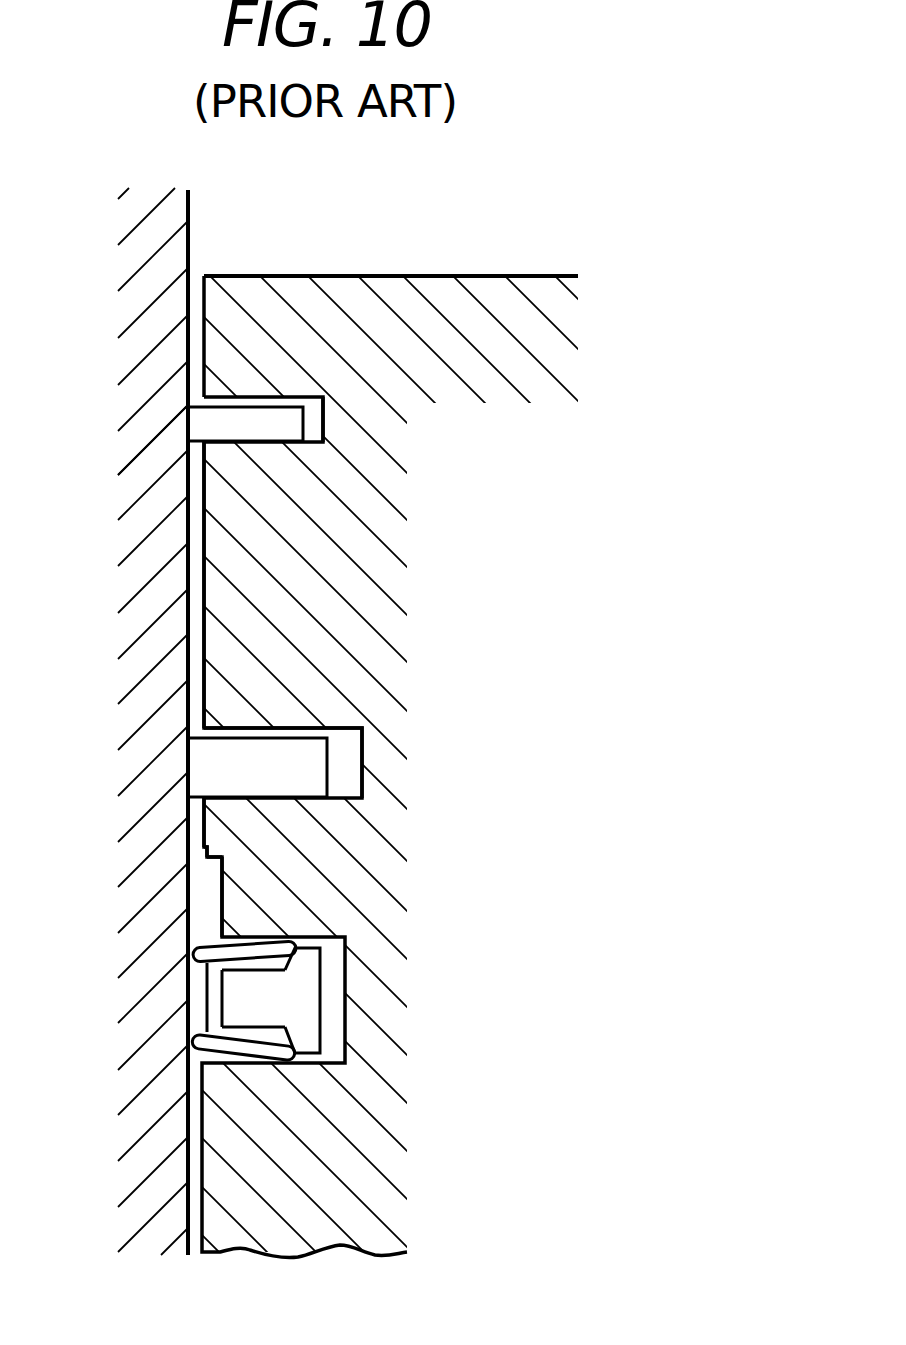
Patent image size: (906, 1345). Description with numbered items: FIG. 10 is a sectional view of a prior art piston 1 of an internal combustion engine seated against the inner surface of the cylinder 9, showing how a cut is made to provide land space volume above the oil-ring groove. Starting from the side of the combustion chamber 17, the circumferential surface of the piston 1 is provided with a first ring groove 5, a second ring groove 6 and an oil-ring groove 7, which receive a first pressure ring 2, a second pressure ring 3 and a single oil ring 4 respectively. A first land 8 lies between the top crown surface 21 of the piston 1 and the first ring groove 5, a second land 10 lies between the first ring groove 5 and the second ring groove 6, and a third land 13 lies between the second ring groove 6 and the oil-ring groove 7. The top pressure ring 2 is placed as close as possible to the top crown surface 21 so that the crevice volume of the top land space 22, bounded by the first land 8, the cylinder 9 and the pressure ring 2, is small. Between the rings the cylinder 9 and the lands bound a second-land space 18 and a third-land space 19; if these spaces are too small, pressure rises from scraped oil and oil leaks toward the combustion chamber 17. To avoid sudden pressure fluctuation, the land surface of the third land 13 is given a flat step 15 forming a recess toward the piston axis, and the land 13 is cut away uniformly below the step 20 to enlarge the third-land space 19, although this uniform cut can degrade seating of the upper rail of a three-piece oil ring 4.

The piston 1 is at (477, 246).
The pressure ring 2 is at (296, 428).
The pressure ring 3 is at (317, 773).
The oil ring 4 is at (303, 978).
The first ring groove 5 is at (316, 400).
The second ring groove 6 is at (348, 745).
The oil-ring groove 7 is at (330, 1042).
The first land 8 is at (206, 343).
The cylinder 9 is at (138, 410).
The second land 10 is at (204, 470).
The third land 13 is at (203, 840).
The flat step 15 is at (222, 908).
The combustion chamber 17 is at (320, 205).
The second-land space 18 is at (190, 578).
The third-land space 19 is at (188, 813).
The step 20 is at (209, 861).
The top crown surface 21 is at (381, 276).
The top land space 22 is at (188, 318).